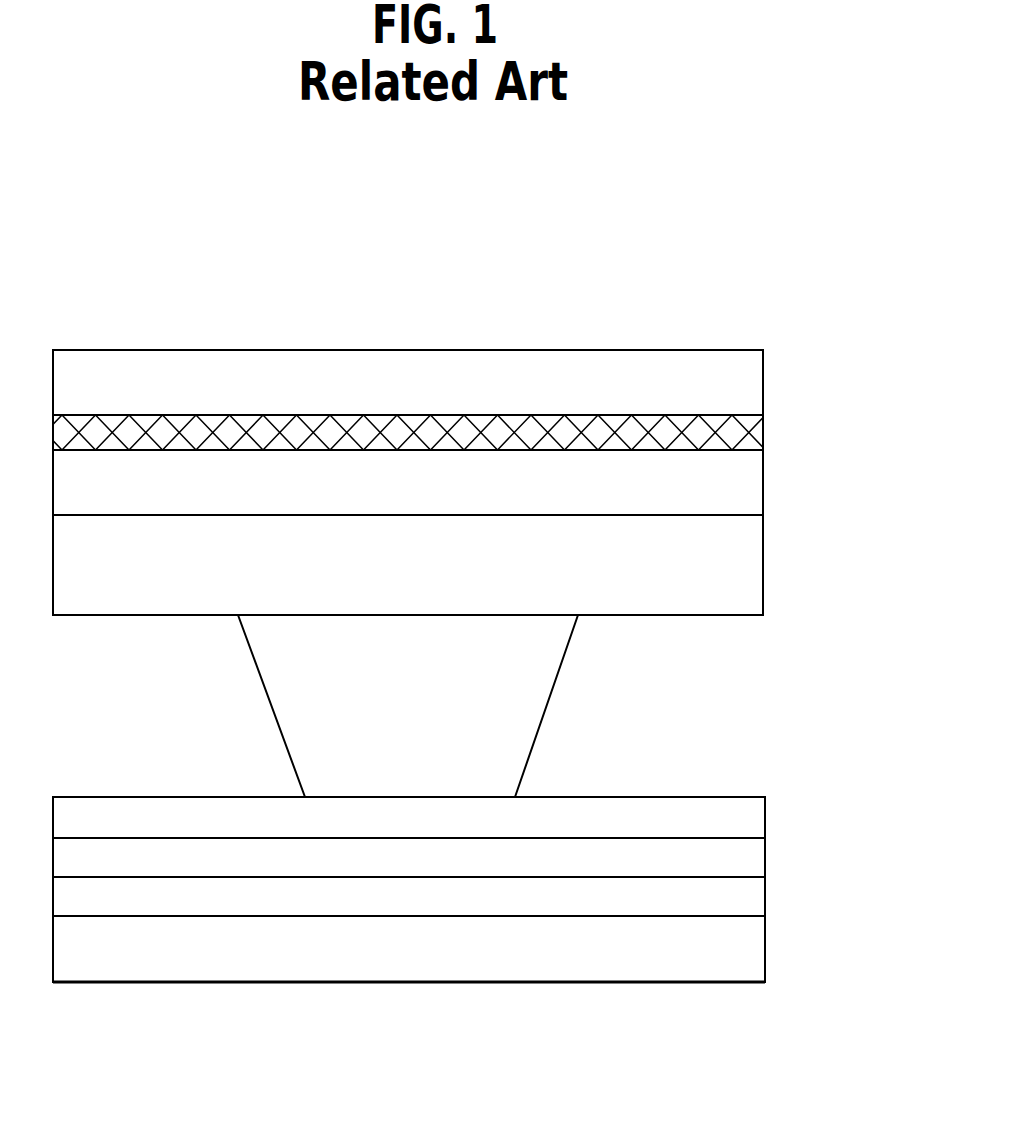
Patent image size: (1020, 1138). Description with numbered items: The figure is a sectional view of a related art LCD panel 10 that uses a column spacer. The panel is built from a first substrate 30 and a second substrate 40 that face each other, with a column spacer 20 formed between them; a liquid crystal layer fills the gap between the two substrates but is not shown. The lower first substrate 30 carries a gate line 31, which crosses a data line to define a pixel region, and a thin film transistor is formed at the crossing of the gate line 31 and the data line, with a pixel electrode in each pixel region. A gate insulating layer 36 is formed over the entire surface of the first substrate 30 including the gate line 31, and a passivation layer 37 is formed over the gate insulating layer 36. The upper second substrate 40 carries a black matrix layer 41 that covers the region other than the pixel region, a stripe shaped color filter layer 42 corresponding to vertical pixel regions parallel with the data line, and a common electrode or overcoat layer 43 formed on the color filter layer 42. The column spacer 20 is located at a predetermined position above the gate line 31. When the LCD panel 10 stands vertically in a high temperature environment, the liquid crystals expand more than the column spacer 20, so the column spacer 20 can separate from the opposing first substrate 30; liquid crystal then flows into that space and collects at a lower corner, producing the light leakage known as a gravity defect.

The LCD panel 10 is at (733, 273).
The column spacer 20 is at (532, 710).
The first substrate 30 is at (752, 949).
The gate line 31 is at (752, 898).
The gate insulating layer 36 is at (752, 856).
The passivation layer 37 is at (752, 818).
The second substrate 40 is at (745, 388).
The black matrix layer 41 is at (745, 441).
The color filter layer 42 is at (745, 495).
The common electrode or overcoat layer 43 is at (745, 574).